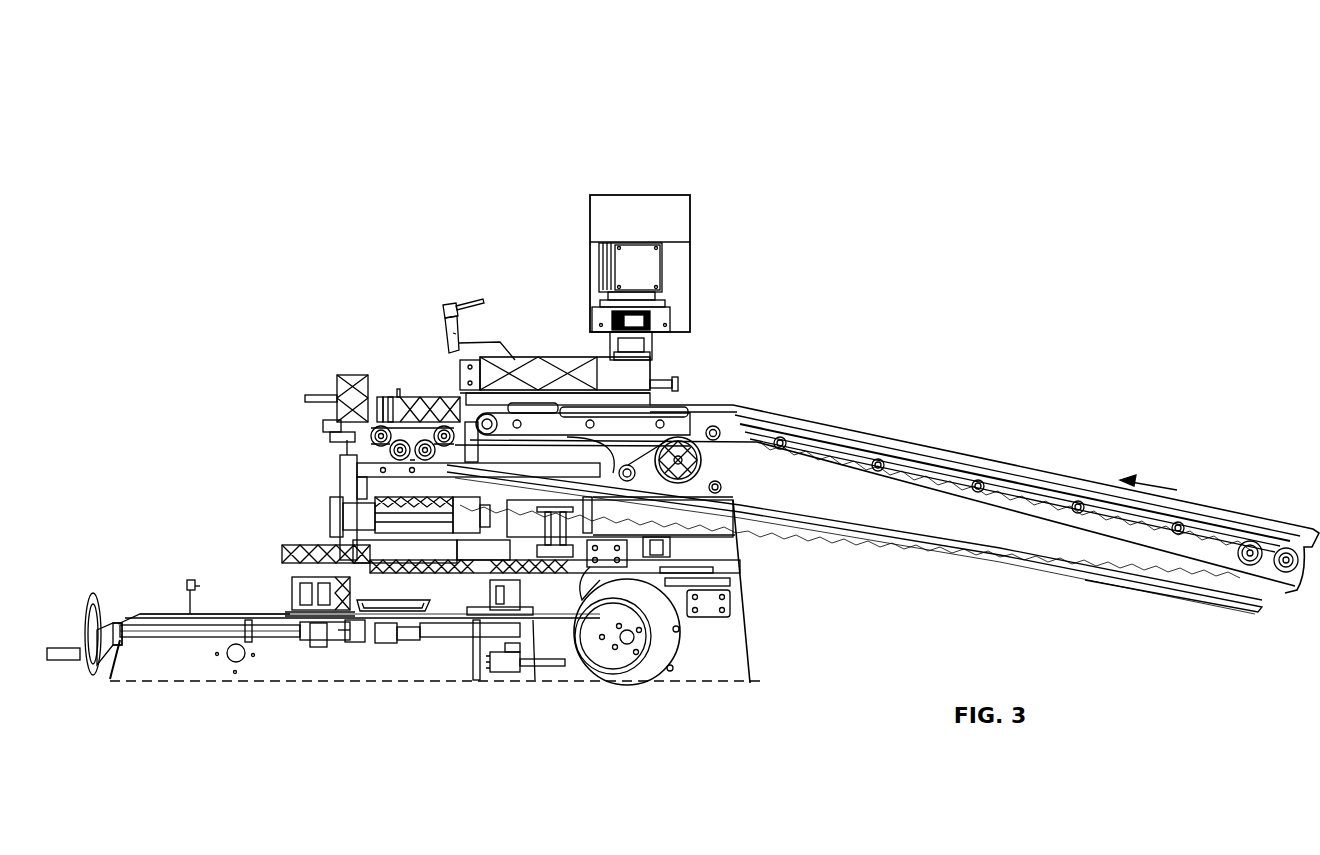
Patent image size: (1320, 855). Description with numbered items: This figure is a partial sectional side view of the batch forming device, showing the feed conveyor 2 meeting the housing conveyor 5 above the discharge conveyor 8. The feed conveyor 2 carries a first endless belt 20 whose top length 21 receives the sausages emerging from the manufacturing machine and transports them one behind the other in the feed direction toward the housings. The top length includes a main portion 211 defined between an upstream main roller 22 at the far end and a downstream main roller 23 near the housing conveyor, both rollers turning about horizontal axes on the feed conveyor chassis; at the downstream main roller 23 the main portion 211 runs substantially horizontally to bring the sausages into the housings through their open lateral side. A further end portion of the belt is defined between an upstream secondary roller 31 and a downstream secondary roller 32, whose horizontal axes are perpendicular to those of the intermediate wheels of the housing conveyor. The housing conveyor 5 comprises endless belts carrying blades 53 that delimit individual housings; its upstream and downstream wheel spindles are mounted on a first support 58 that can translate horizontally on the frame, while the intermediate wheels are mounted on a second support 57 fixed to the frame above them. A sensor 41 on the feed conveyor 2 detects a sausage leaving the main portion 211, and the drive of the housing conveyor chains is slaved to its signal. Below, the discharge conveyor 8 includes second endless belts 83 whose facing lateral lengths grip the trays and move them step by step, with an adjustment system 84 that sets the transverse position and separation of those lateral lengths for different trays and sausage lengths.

The feed conveyor 2 is at (939, 440).
The housing conveyor 5 is at (334, 371).
The discharge conveyor 8 is at (285, 584).
The first endless belt 20 is at (1002, 481).
The top length 21 is at (851, 446).
The upstream main roller 22 is at (1283, 553).
The downstream main roller 23 is at (487, 404).
The upstream secondary roller 31 is at (447, 420).
The downstream secondary roller 32 is at (350, 438).
The sensor 41 is at (443, 310).
The blades 53 is at (387, 397).
The second support 57 is at (360, 470).
The first support 58 is at (353, 510).
The second endless belts 83 is at (345, 647).
The adjustment system 84 is at (284, 645).
The top length portion (main portion) 211 is at (415, 427).